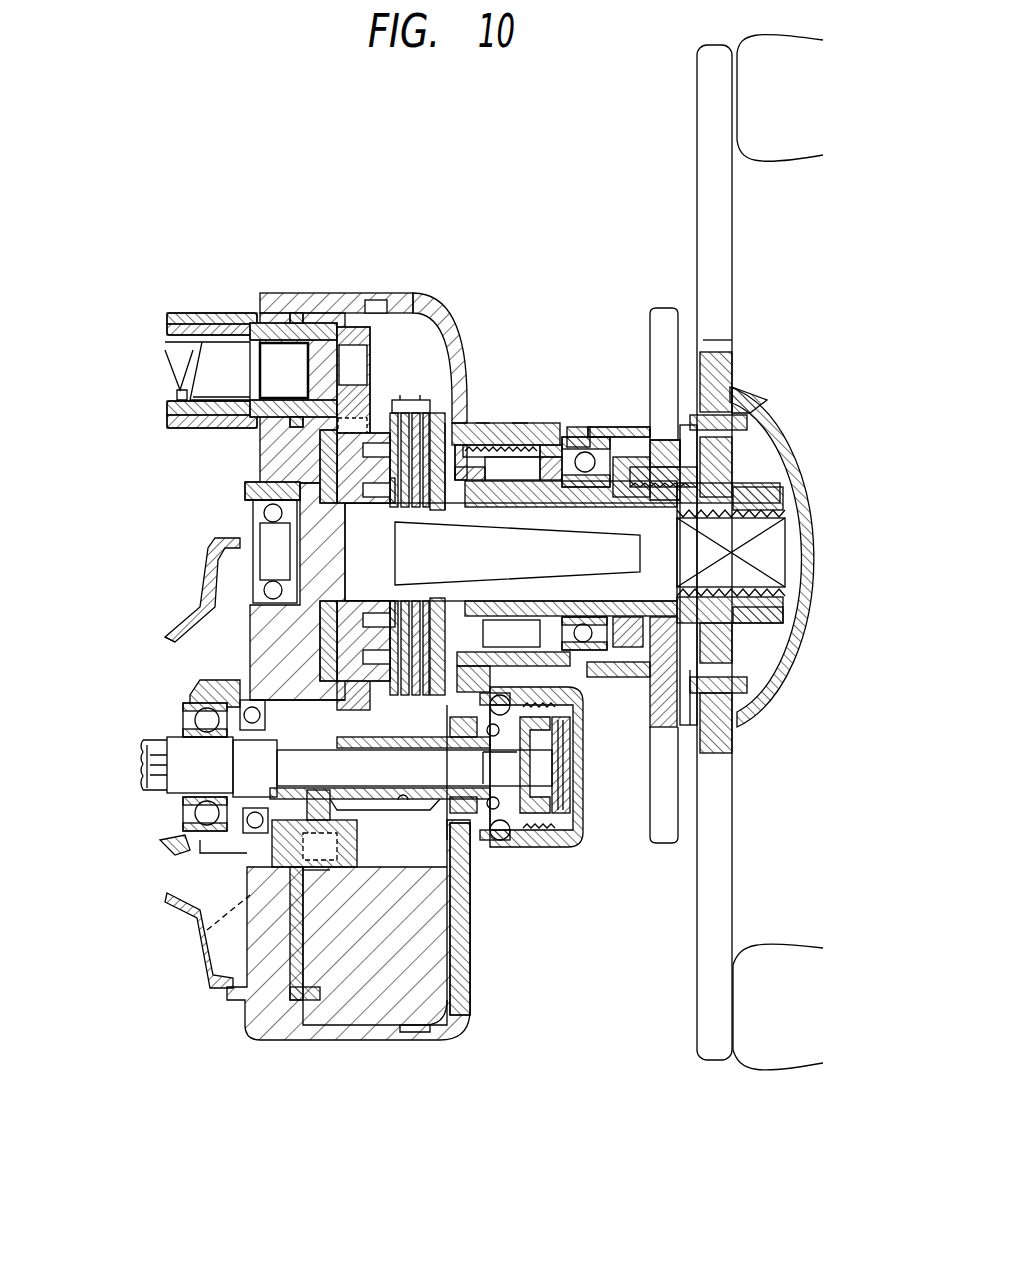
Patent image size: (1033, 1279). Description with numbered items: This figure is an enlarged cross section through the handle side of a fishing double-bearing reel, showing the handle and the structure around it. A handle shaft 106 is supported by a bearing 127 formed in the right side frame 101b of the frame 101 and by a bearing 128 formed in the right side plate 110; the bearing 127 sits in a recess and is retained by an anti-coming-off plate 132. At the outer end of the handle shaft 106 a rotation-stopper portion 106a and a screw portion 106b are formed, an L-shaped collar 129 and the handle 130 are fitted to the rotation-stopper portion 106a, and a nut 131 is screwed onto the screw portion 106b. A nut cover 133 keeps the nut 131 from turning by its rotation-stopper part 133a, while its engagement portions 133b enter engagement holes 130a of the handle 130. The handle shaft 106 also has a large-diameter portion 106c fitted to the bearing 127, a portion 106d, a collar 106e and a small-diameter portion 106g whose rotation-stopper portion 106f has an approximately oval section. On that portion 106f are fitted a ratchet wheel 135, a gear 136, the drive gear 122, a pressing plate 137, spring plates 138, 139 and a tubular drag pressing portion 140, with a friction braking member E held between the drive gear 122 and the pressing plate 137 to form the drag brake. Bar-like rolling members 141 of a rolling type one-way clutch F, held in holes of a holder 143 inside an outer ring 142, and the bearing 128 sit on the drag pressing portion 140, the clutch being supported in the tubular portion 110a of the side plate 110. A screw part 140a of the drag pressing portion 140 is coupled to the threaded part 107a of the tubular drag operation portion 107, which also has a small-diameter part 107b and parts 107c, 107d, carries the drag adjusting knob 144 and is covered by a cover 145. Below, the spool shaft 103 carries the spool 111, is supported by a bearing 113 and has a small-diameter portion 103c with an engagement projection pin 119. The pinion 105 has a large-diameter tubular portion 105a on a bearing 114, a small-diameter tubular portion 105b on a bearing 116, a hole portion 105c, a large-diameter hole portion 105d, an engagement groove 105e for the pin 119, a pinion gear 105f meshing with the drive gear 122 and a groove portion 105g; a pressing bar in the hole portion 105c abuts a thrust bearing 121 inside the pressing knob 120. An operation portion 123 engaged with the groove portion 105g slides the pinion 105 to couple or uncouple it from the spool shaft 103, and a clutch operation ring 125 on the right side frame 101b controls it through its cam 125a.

The frame 101 is at (286, 279).
The right side frame 101b is at (263, 297).
The spool shaft 103 is at (142, 808).
The small-diameter portion 103c is at (190, 810).
The pinion 105 is at (378, 828).
The large-diameter tubular portion 105a is at (247, 853).
The small-diameter tubular portion 105b is at (470, 942).
The hole portion 105c is at (413, 812).
The large-diameter hole portion 105d is at (150, 787).
The engagement groove 105e is at (150, 757).
The pinion gear 105f is at (403, 802).
The groove portion 105g is at (347, 873).
The handle shaft 106 is at (786, 580).
The rotation-stopper portion 106a is at (798, 574).
The screw portion 106b is at (797, 617).
The large-diameter portion 106c is at (257, 528).
The lever 106d is at (253, 570).
The collar 106e is at (345, 480).
The rotation-stopper portion 106f is at (730, 752).
The small-diameter portion 106g is at (622, 655).
The drag operation portion 107 is at (643, 425).
The threaded part 107a is at (783, 533).
The small-diameter part 107b is at (710, 468).
The hub flange 107c is at (703, 340).
The hub boss 107d is at (707, 452).
The right side plate 110 is at (381, 280).
The tubular portion 110a is at (600, 428).
The spool 111 is at (165, 617).
The bearing 113 is at (190, 710).
The bearing 114 is at (240, 677).
The bearing 116 is at (518, 848).
The engagement projection pin 119 is at (150, 750).
The pressing knob 120 is at (560, 855).
The thrust bearing 121 is at (580, 870).
The drive gear 122 is at (400, 400).
The operation portion 123 is at (332, 867).
The clutch operation ring 125 is at (247, 878).
The cam 125a is at (207, 930).
The bearing 127 is at (245, 496).
The bearing 128 is at (528, 453).
The collar 129 is at (730, 633).
The handle 130 is at (748, 214).
The engagement holes 130a is at (783, 430).
The nut 131 is at (783, 500).
The anti-coming-off plate 132 is at (255, 483).
The nut cover 133 is at (786, 405).
The rotation-stopper part 133a is at (783, 488).
The engagement portions 133b is at (703, 380).
The ratchet wheel 135 is at (320, 425).
The gear 136 is at (348, 400).
The pressing plate 137 is at (452, 475).
The spring plate 138 is at (463, 423).
The spring plate 139 is at (472, 423).
The tubular drag pressing portion 140 is at (492, 440).
The screw part 140a is at (640, 470).
The bar-like rolling members 141 is at (532, 456).
The outer ring 142 is at (520, 423).
The holder 143 is at (483, 423).
The drag adjusting knob 144 is at (672, 310).
The cover 145 is at (630, 460).
The friction braking member E is at (412, 398).
The rolling type one-way clutch F is at (501, 466).